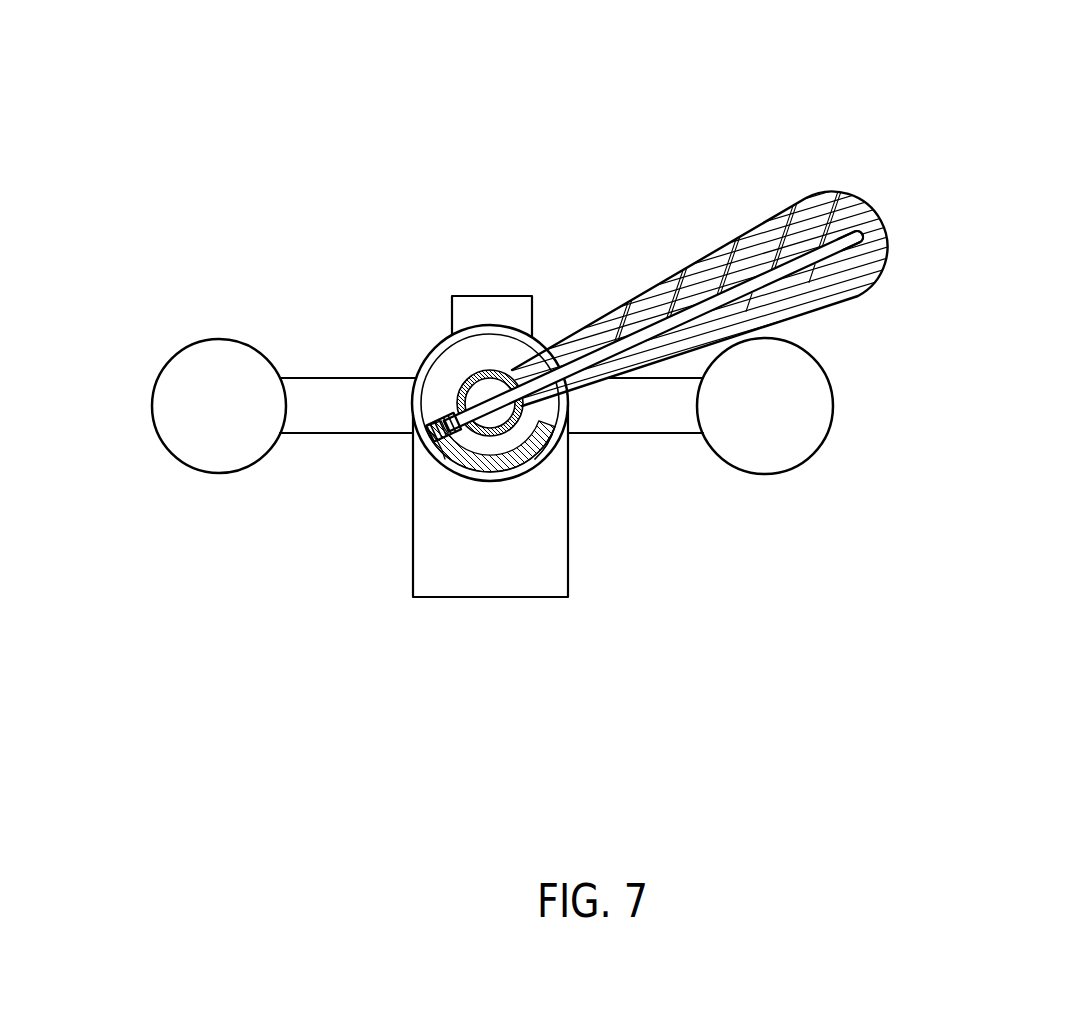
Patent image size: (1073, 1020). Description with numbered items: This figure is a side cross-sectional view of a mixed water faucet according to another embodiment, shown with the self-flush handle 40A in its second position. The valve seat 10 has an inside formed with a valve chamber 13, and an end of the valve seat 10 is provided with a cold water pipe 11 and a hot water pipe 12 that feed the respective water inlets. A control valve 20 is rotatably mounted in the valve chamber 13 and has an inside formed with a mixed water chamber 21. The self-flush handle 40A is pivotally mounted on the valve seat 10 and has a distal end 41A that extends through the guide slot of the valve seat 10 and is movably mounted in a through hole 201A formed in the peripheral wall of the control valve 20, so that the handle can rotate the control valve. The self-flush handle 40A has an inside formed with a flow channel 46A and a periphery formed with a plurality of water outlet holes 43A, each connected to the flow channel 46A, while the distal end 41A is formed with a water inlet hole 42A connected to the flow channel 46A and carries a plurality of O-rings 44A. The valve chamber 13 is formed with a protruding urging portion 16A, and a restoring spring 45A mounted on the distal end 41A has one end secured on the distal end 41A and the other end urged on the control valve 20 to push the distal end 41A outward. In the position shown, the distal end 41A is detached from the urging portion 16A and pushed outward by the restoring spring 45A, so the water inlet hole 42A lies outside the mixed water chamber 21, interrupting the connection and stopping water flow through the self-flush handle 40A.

The valve seat 10 is at (697, 448).
The cold water pipe 11 is at (777, 462).
The hot water pipe 12 is at (233, 340).
The valve chamber 13 is at (450, 357).
The urging portion 16A is at (538, 482).
The control valve 20 is at (442, 395).
The mixed water chamber 21 is at (485, 370).
The self-flush handle 40A is at (702, 243).
The distal end 41A is at (545, 443).
The through hole 201A is at (560, 445).
The water inlet hole 42A is at (466, 447).
The water outlet holes 43A is at (850, 205).
The O-rings 44A is at (478, 440).
The restoring spring 45A is at (440, 432).
The flow channel 46A is at (815, 257).